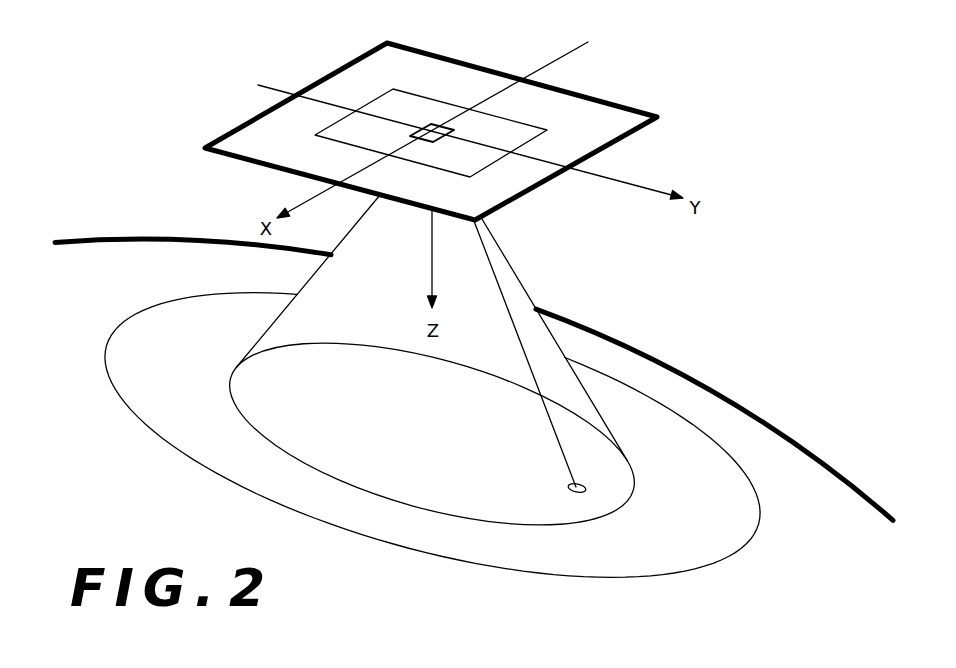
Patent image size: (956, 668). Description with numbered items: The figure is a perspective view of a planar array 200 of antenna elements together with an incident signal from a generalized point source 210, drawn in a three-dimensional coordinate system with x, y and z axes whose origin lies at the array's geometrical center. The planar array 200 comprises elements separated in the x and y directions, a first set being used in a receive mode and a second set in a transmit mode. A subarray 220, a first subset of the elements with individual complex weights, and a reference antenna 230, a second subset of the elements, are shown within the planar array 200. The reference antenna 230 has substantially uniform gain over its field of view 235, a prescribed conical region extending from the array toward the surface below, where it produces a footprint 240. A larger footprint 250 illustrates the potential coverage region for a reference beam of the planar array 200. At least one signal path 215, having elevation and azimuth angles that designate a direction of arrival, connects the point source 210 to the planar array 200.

The planar array 200 is at (613, 122).
The subarray 220 is at (385, 107).
The reference antenna 230 is at (430, 127).
The field of view 235 is at (350, 232).
The signal path 215 is at (515, 334).
The point source 210 is at (567, 487).
The footprint 240 is at (287, 453).
The footprint 250 is at (252, 493).